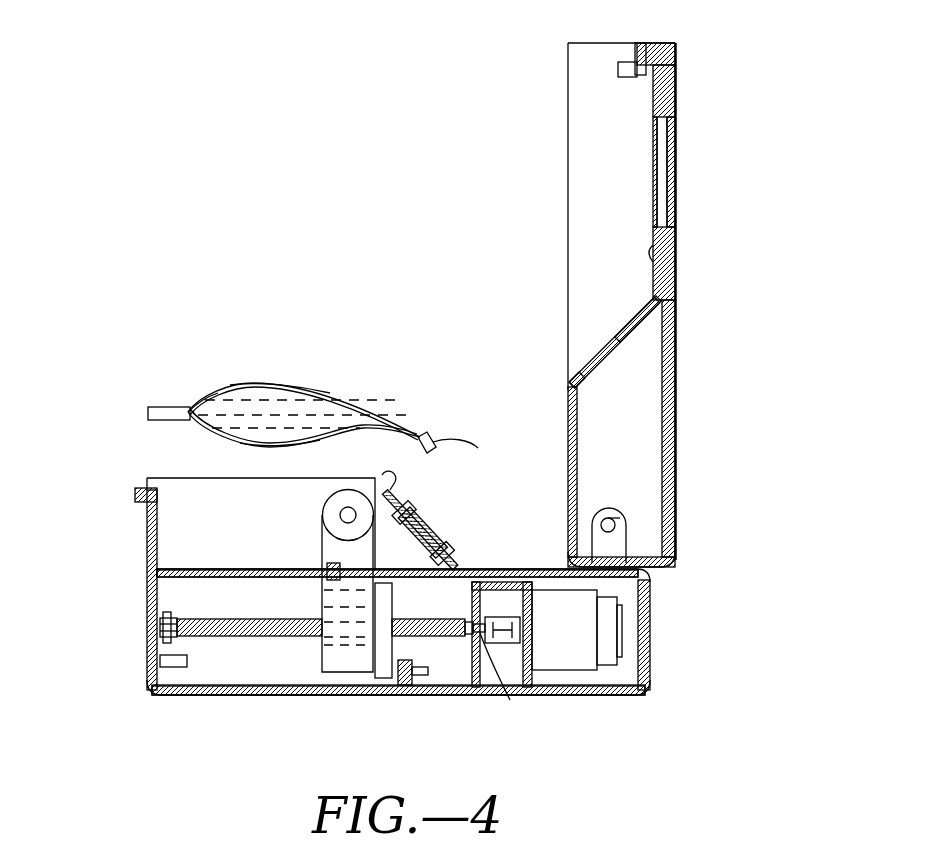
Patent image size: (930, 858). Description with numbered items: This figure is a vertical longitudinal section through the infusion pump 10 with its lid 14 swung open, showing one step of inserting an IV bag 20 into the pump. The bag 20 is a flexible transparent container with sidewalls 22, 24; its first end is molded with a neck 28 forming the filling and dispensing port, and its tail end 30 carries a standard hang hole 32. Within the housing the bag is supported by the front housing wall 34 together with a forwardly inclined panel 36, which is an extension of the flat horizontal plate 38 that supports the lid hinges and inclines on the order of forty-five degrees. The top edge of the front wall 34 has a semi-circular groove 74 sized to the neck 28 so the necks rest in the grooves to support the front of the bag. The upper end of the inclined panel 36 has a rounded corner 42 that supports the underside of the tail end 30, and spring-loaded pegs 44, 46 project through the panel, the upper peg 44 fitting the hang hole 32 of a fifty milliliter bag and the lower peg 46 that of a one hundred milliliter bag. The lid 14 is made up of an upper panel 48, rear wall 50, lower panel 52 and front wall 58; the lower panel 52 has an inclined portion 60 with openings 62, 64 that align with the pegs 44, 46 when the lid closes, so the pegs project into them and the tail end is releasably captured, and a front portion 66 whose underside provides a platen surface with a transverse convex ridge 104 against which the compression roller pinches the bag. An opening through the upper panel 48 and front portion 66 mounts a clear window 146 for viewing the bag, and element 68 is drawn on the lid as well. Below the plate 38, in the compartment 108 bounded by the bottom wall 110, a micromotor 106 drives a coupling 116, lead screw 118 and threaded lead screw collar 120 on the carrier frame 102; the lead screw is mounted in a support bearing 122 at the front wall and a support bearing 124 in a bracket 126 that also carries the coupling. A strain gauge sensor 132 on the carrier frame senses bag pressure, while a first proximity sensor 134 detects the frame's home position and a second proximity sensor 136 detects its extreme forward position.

The infusion pump 10 is at (688, 280).
The lid 14 is at (688, 367).
The IV bag 20 is at (310, 382).
The sidewall 22 is at (248, 382).
The sidewall 24 is at (270, 447).
The neck 28 is at (168, 421).
The tail end 30 is at (432, 445).
The hang hole 32 is at (430, 440).
The front housing wall 34 is at (147, 533).
The forwardly inclined panel 36 is at (455, 568).
The flat horizontal plate 38 is at (265, 568).
The rounded corner 42 is at (389, 490).
The spring-loaded peg 44 is at (415, 505).
The spring-loaded peg 46 is at (440, 530).
The upper panel 48 is at (676, 463).
The rear wall 50 is at (650, 568).
The lower panel 52 is at (562, 408).
The front wall 58 is at (647, 43).
The inclined portion 60 is at (578, 378).
The opening 62 is at (627, 333).
The opening 64 is at (598, 362).
The front portion 66 is at (653, 82).
The latch 68 is at (622, 63).
The semi-circular groove 74 is at (137, 488).
The carrier frame 102 is at (322, 665).
The convex ridge 104 is at (648, 253).
The micromotor 106 is at (608, 632).
The compartment 108 is at (458, 604).
The bottom wall 110 is at (598, 697).
The coupling 116 is at (530, 660).
The lead screw 118 is at (470, 686).
The threaded lead screw collar 120 is at (386, 672).
The support bearing 122 is at (166, 614).
The support bearing 124 is at (502, 693).
The bracket 126 is at (198, 402).
The strain gauge sensor 132 is at (325, 580).
The first proximity sensor 134 is at (426, 676).
The second proximity sensor 136 is at (182, 664).
The clear window 146 is at (676, 138).